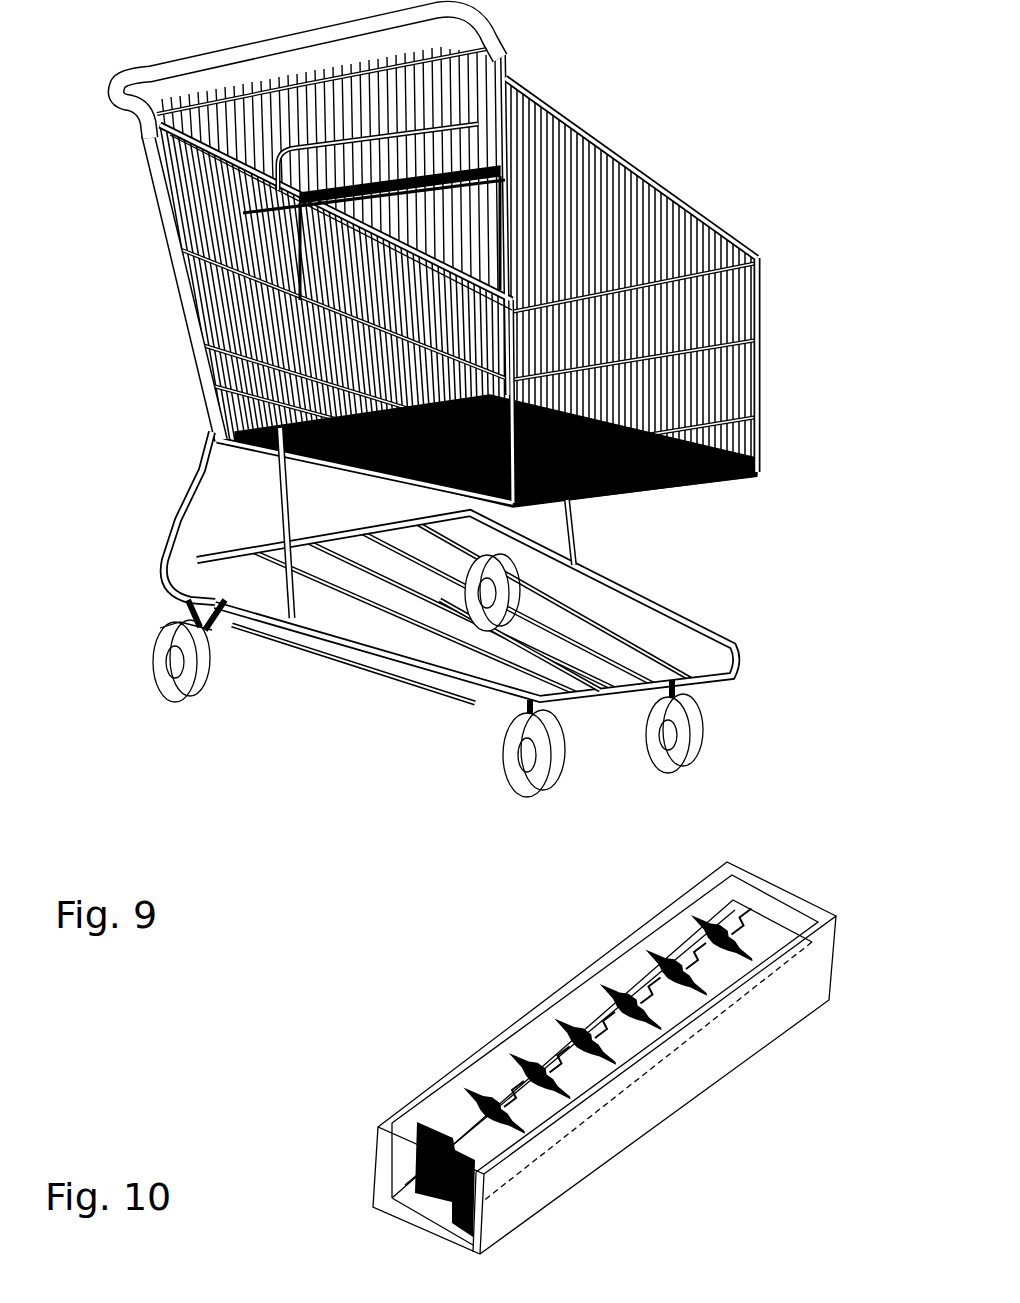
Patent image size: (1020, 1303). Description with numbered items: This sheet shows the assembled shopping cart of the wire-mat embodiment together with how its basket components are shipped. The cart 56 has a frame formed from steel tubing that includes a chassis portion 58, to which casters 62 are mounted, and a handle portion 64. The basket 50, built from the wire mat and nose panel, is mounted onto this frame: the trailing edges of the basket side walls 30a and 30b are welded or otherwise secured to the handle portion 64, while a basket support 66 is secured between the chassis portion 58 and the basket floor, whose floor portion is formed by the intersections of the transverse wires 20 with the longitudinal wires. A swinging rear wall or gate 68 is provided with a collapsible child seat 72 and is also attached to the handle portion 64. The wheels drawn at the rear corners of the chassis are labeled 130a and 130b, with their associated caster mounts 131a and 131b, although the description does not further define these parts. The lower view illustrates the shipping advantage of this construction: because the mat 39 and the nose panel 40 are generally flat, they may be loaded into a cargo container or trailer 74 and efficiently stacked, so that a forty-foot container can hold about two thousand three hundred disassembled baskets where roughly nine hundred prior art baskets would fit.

In FIG. 9, the transverse wires 20 is at (723, 480).
In FIG. 9, the basket side wall portion 30a is at (665, 185).
In FIG. 9, the basket side wall portion 30b is at (193, 125).
In FIG. 10, the mat 39 is at (491, 1073).
In FIG. 10, the nose panel 40 is at (792, 888).
In FIG. 9, the basket 50 is at (620, 125).
In FIG. 9, the cart 56 is at (285, 683).
In FIG. 9, the chassis portion 58 is at (720, 643).
In FIG. 9, the casters 62 is at (531, 808).
In FIG. 9, the handle portion 64 is at (185, 298).
In FIG. 9, the basket support 66 is at (280, 510).
In FIG. 9, the swinging rear wall or gate 68 is at (228, 210).
In FIG. 9, the collapsible child seat 72 is at (505, 55).
In FIG. 10, the cargo container or trailer 74 is at (585, 1094).
In FIG. 9, the rear left wheel 130a is at (173, 643).
In FIG. 9, the rear right wheel 130b is at (513, 567).
In FIG. 9, the left caster 131a is at (180, 710).
In FIG. 9, the right caster 131b is at (463, 633).